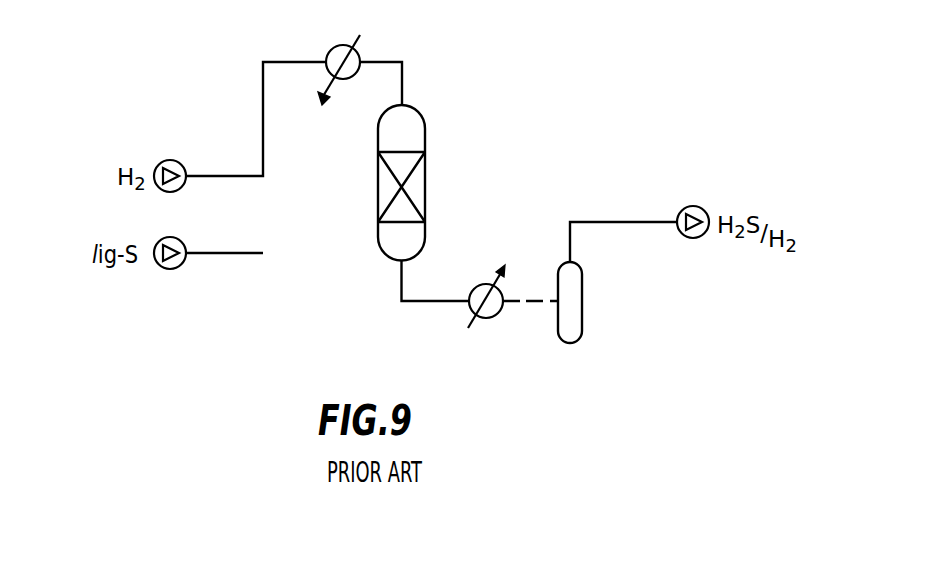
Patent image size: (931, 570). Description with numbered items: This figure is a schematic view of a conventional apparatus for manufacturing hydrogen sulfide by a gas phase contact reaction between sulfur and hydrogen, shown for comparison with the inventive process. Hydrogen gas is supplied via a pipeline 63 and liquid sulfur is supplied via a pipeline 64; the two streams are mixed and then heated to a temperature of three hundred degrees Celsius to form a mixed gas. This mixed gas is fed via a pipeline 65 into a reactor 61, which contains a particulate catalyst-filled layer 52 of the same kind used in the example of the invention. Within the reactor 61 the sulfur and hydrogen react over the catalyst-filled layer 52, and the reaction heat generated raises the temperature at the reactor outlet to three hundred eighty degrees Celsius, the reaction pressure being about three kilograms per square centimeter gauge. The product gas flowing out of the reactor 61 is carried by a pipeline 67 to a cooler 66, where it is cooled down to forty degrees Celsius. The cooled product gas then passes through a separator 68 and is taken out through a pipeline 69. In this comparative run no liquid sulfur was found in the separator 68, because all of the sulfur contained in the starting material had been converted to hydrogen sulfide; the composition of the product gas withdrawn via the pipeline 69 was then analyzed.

The particulate catalyst-filled layer 52 is at (378, 169).
The reactor 61 is at (425, 132).
The pipeline 63 is at (225, 175).
The pipeline 64 is at (224, 255).
The pipeline 65 is at (403, 74).
The cooler 66 is at (495, 313).
The pipeline 67 is at (430, 303).
The separator 68 is at (582, 320).
The pipeline 69 is at (630, 222).